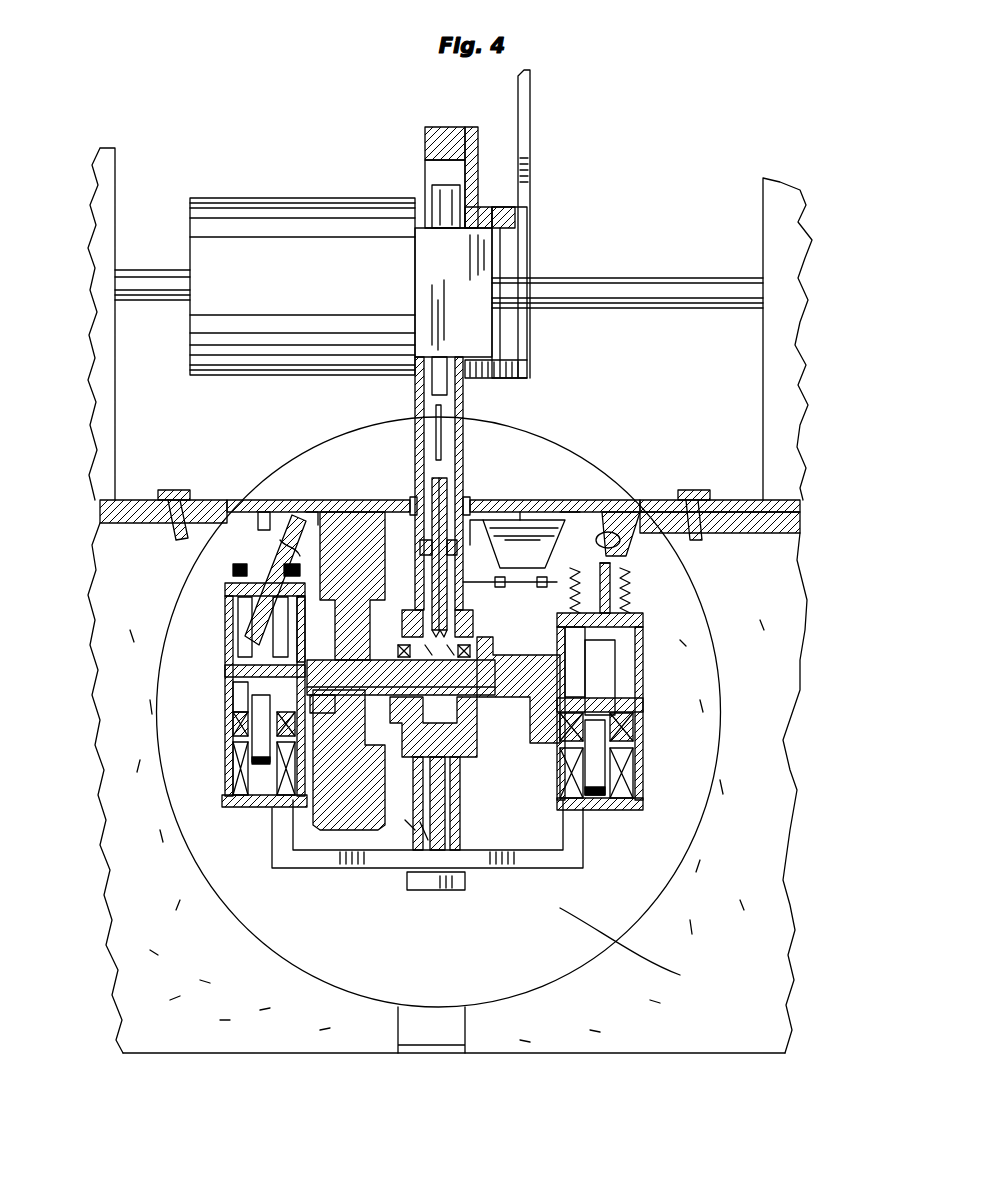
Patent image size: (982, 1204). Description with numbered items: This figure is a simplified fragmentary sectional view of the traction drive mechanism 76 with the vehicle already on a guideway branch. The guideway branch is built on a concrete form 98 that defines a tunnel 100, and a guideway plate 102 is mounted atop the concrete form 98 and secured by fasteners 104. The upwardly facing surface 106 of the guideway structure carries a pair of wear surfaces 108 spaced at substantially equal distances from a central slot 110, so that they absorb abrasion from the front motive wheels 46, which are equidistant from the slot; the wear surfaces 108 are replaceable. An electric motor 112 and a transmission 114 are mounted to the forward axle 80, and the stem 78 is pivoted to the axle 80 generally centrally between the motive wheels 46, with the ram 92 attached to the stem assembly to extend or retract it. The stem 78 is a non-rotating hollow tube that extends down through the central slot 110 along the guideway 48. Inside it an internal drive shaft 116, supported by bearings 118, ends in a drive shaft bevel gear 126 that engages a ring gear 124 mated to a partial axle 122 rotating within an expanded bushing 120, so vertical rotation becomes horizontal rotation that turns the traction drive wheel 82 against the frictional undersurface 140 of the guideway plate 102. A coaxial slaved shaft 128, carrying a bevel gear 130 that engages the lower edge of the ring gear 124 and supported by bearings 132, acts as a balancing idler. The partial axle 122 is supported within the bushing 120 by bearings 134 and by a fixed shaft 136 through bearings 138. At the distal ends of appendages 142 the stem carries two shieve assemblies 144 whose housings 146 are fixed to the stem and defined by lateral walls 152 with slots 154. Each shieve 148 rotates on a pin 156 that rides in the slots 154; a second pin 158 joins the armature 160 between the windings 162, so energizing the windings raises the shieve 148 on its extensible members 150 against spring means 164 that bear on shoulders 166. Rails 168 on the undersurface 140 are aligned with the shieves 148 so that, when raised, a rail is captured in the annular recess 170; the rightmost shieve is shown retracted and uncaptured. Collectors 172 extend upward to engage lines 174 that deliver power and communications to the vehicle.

The front motive wheels 46 is at (115, 415).
The guideway 48 is at (616, 503).
The traction drive mechanism 76 is at (380, 884).
The stem 78 is at (465, 447).
The axle 80 is at (636, 285).
The traction drive wheel 82 is at (320, 520).
The ram 92 is at (530, 122).
The concrete form 98 is at (258, 968).
The tunnel 100 is at (660, 900).
The guideway plate 102 is at (240, 512).
The fasteners 104 is at (172, 490).
The upwardly facing surface 106 is at (386, 512).
The wear surfaces 108 is at (120, 500).
The central slot 110 is at (413, 505).
The electric motor 112 is at (322, 282).
The transmission 114 is at (452, 270).
The internal drive shaft 116 is at (448, 492).
The bearings 118 is at (425, 545).
The expanded bushing 120 is at (480, 658).
The partial axle 122 is at (400, 645).
The ring gear 124 is at (402, 740).
The drive shaft bevel gear 126 is at (450, 635).
The slaved shaft 128 is at (455, 790).
The bevel gear 130 is at (458, 755).
The bearings 132 is at (432, 825).
The bearings 134 is at (460, 705).
The fixed shaft 136 is at (322, 662).
The bearings 138 is at (312, 668).
The undersurface 140 is at (470, 522).
The appendages 142 is at (240, 808).
The shieve assemblies 144 is at (225, 660).
The assembly housings 146 is at (222, 627).
The shieves 148 is at (228, 560).
The extensible members 150 is at (226, 715).
The lateral walls 152 is at (304, 655).
The slot 154 is at (226, 690).
The pin 156 is at (225, 597).
The second pin 158 is at (225, 670).
The armature 160 is at (226, 732).
The windings 162 is at (226, 786).
The spring means 164 is at (232, 570).
The shoulders 166 is at (303, 585).
The rails 168 is at (295, 555).
The annular recess 170 is at (270, 520).
The collectors 172 is at (503, 538).
The lines 174 is at (520, 540).